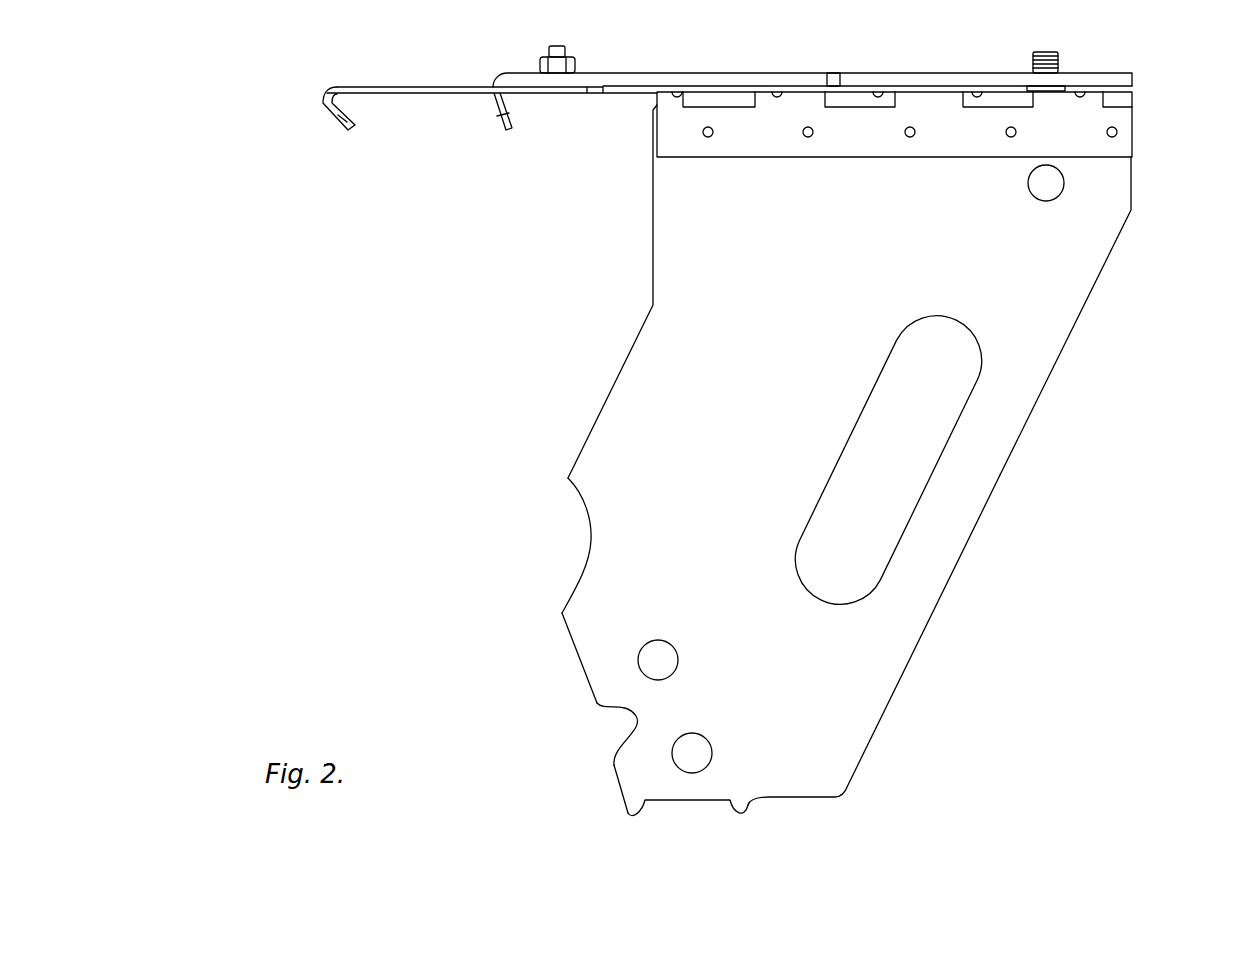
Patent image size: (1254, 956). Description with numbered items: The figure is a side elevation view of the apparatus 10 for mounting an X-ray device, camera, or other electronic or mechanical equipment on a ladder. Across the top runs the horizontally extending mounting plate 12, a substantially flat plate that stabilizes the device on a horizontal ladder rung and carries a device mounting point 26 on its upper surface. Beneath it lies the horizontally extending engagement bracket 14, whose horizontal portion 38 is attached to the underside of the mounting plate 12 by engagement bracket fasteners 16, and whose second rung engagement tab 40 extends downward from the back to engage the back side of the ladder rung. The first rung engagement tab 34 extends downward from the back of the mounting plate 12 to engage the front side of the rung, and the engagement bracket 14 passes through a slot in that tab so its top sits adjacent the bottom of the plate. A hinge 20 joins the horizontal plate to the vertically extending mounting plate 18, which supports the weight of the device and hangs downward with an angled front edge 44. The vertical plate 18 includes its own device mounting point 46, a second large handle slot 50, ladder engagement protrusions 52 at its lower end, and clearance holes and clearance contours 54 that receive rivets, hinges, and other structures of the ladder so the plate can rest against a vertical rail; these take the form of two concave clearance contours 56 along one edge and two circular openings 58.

The apparatus 10 is at (357, 336).
The horizontally extending mounting plate 12 is at (797, 62).
The horizontally extending engagement bracket 14 is at (459, 99).
The engagement bracket fasteners 16 is at (567, 50).
The vertically extending mounting plate 18 is at (803, 482).
The hinge 20 is at (1143, 98).
The device mounting point 26 is at (1058, 53).
The first rung engagement tab 34 is at (498, 128).
The horizontal portion 38 is at (405, 87).
The second rung engagement tab 40 is at (343, 125).
The angled front edge 44 is at (965, 550).
The device mounting point 46 is at (1046, 200).
The second large handle slot 50 is at (898, 441).
The ladder engagement protrusions 52 is at (637, 815).
The clearance holes and/or clearance contours 54 is at (532, 645).
The concave clearance contours 56 is at (590, 525).
The circular openings 58 is at (700, 734).